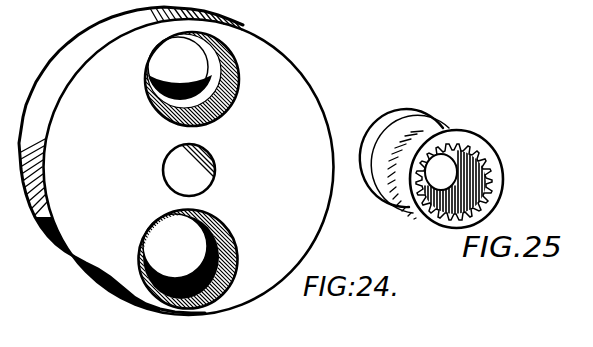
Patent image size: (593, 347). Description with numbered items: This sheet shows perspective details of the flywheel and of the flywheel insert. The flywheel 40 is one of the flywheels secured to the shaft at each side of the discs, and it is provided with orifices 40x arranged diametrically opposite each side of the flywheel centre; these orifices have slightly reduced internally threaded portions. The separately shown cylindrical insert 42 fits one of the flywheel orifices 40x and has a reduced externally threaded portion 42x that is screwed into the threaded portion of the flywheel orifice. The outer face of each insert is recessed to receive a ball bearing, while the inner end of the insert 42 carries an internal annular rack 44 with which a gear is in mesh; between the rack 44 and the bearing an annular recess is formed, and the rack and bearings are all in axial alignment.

In FIG. 24, the flywheel 40 is at (292, 100).
In FIG. 24, the orifices 40x is at (243, 78).
In FIG. 25, the cylindrical insert 42 is at (446, 128).
In FIG. 25, the reduced externally threaded portion 42x is at (403, 136).
In FIG. 25, the internal annular rack 44 is at (490, 187).